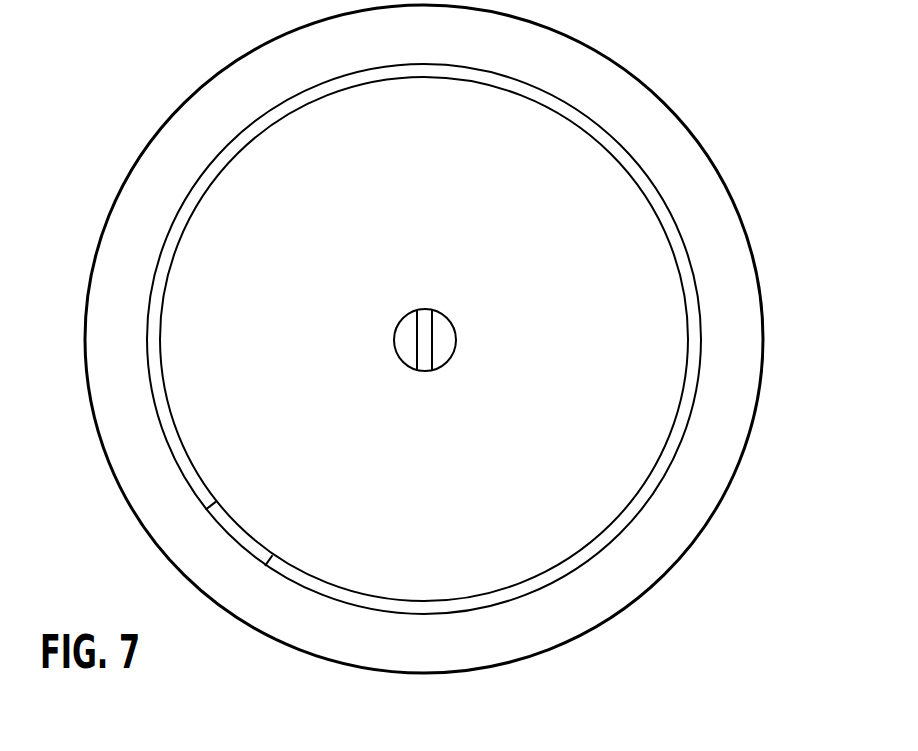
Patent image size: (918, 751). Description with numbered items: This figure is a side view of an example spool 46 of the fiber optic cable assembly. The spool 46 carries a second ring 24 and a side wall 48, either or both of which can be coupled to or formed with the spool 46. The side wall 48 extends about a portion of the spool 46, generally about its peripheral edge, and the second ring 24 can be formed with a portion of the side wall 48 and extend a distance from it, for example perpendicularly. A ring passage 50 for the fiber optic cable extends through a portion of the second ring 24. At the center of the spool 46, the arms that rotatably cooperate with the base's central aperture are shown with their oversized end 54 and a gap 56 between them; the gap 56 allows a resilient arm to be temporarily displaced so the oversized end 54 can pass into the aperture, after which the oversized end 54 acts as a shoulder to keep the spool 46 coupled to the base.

The spool 46 is at (818, 226).
The side wall 48 is at (324, 188).
The second ring 24 is at (698, 342).
The ring passage 50 is at (222, 531).
The oversized end 54 is at (405, 338).
The gap 56 is at (424, 282).